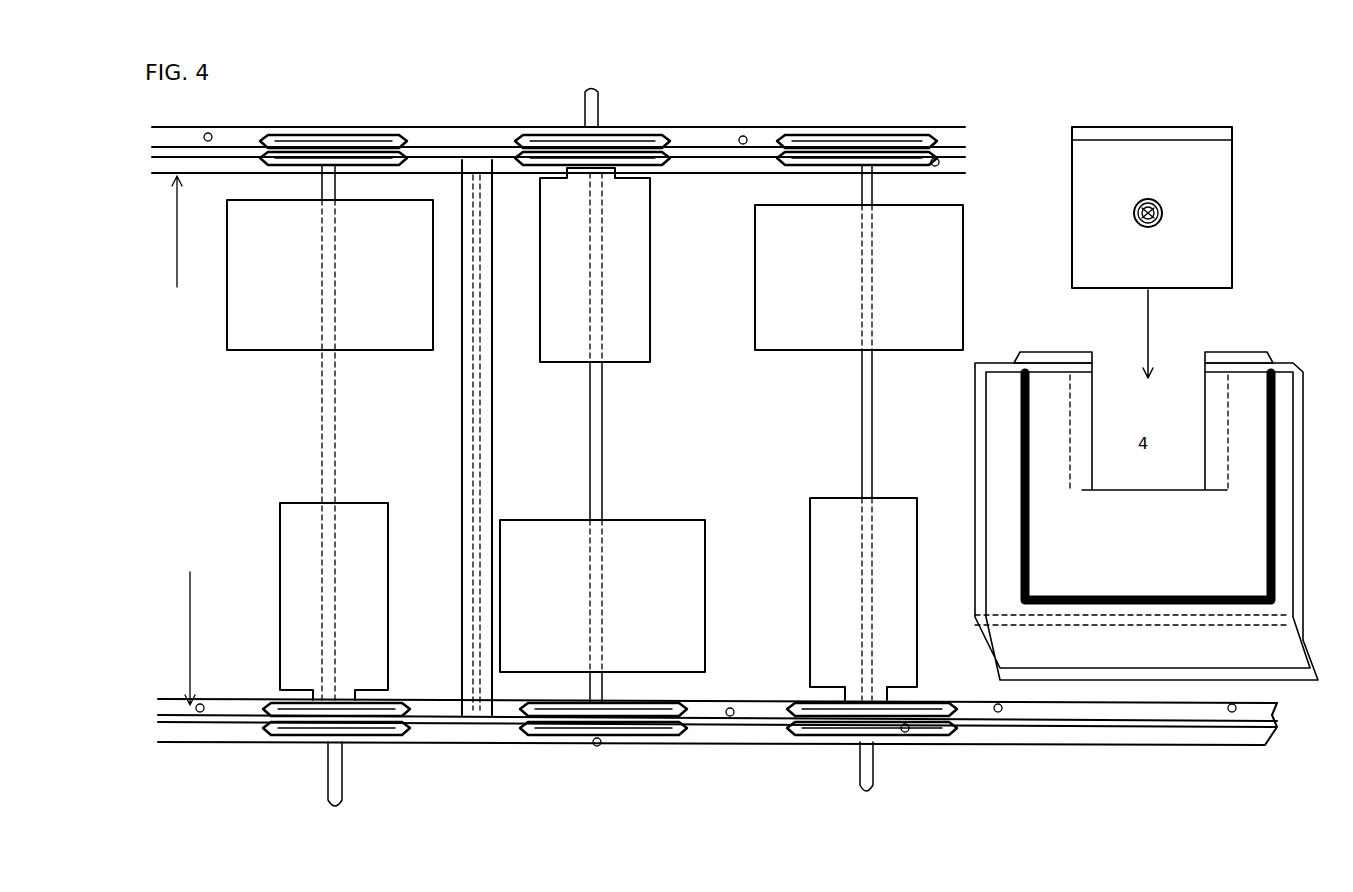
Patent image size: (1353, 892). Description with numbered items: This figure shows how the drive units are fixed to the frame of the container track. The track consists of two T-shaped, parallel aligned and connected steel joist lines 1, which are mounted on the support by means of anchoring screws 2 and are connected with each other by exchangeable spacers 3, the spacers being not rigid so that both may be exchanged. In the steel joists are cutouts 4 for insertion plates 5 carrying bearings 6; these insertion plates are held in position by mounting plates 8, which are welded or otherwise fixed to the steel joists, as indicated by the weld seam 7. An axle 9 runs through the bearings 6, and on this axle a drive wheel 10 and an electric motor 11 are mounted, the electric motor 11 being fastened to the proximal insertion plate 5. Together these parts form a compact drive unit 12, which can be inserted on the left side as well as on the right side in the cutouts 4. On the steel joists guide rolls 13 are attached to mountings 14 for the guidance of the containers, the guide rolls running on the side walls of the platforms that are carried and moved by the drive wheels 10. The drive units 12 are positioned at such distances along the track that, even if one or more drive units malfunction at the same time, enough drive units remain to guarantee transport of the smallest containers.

The steel joist lines 1 is at (183, 440).
The anchoring screws 2 is at (212, 135).
The spacers 3 is at (470, 190).
The cutouts 4 is at (378, 148).
The insertion plates 5 is at (352, 724).
The bearings 6 is at (1160, 222).
The weld seam 7 is at (1248, 600).
The mounting plates 8 is at (1085, 357).
The axle 9 is at (1158, 203).
The drive wheel 10 is at (370, 323).
The electric motor 11 is at (370, 508).
The drive unit 12 is at (610, 170).
The guide rolls 13 is at (863, 700).
The mountings 14 is at (898, 723).